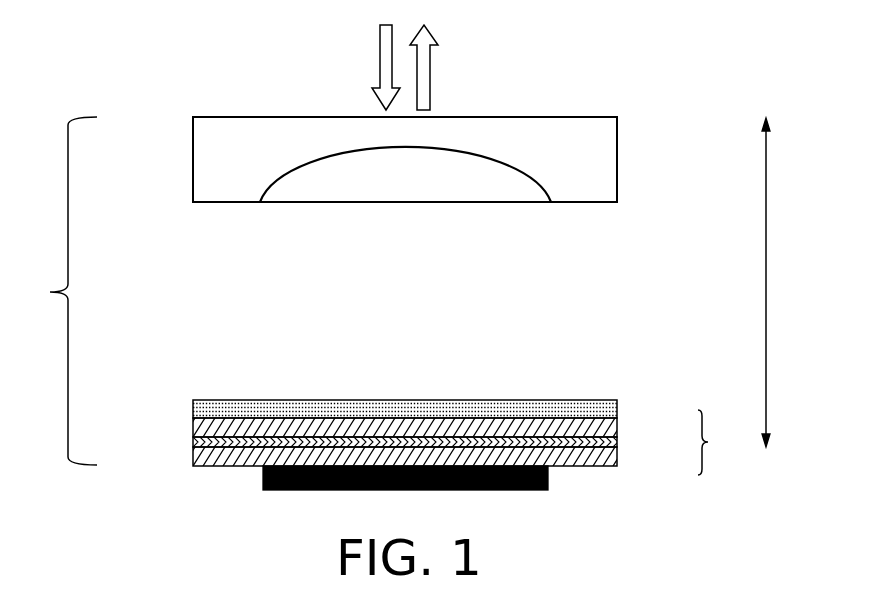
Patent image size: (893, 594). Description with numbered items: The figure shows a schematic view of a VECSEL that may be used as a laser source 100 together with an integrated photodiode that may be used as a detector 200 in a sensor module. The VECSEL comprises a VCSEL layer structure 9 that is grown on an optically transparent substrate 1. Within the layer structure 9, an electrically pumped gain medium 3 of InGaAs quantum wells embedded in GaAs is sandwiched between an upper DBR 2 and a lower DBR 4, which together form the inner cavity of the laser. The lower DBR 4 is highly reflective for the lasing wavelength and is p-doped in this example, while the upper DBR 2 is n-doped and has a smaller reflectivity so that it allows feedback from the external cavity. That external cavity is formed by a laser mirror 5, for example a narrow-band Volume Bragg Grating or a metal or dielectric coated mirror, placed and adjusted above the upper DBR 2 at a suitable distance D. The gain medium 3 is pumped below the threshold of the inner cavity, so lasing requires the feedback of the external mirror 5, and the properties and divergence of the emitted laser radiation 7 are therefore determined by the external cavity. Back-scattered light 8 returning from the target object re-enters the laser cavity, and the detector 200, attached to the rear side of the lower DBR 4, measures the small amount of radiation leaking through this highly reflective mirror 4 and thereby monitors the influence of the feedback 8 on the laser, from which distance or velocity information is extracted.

The optically transparent substrate 1 is at (193, 408).
The upper DBR 2 is at (617, 428).
The gain medium 3 is at (193, 440).
The lower DBR 4 is at (617, 458).
The laser mirror 5 is at (617, 160).
The emitted laser radiation 7 is at (431, 69).
The back-scattered light 8 is at (380, 69).
The VCSEL layer structure 9 is at (713, 442).
The laser source 100 is at (50, 292).
The detector 200 is at (548, 478).
The distance D is at (776, 282).